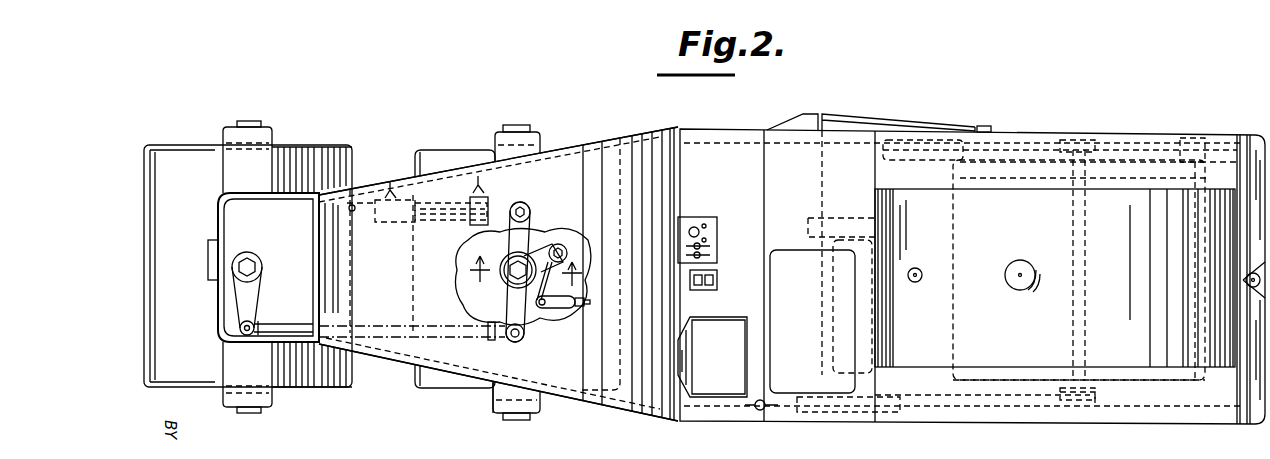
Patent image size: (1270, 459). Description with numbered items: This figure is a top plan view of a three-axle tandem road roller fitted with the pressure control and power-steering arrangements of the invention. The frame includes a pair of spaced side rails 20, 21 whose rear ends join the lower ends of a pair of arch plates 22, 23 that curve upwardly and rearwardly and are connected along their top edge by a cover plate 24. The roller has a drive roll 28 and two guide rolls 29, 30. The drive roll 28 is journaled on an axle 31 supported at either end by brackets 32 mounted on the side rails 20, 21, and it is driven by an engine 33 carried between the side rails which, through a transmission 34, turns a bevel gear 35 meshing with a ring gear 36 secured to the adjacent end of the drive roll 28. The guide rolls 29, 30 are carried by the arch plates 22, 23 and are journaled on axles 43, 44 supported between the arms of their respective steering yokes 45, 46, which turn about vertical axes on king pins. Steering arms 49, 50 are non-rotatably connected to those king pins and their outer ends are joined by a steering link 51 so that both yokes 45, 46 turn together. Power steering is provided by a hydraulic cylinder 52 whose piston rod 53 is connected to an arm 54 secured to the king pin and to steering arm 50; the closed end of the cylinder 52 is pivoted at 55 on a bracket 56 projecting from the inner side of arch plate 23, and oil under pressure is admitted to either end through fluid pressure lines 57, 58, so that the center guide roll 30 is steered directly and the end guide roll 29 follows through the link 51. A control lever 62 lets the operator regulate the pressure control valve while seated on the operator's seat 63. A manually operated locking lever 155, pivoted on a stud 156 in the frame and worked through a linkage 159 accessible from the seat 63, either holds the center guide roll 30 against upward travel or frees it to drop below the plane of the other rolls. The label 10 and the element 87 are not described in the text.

The direction arrows 10 is at (542, 281).
The side rail 20 is at (1010, 425).
The side rail 21 is at (1160, 133).
The arch plate 22 is at (597, 400).
The arch plate 23 is at (597, 143).
The cover plate 24 is at (469, 365).
The drive roll 28 is at (958, 342).
The guide roll 29 is at (342, 388).
The guide roll 30 is at (416, 372).
The axle 31 is at (1083, 348).
The bracket 32 is at (1098, 391).
The engine 33 is at (822, 298).
The transmission 34 is at (810, 168).
The bevel gear 35 is at (993, 126).
The ring gear 36 is at (1029, 150).
The axle 43 is at (250, 414).
The axle 44 is at (517, 421).
The steering yoke 45 is at (232, 376).
The steering yoke 46 is at (493, 402).
The steering arm 49 is at (240, 300).
The steering arm 50 is at (521, 338).
The steering link 51 is at (390, 327).
The hydraulic cylinder 52 is at (400, 224).
The piston rod 53 is at (497, 204).
The arm 54 is at (533, 214).
The pivot 55 is at (346, 186).
The bracket 56 is at (372, 220).
The fluid pressure line 57 is at (390, 182).
The fluid pressure line 58 is at (470, 160).
The control lever 62 is at (680, 272).
The operator's seat 63 is at (733, 331).
The control panel 87 is at (718, 273).
The locking lever 155 is at (566, 302).
The stud 156 is at (558, 244).
The linkage 159 is at (553, 309).